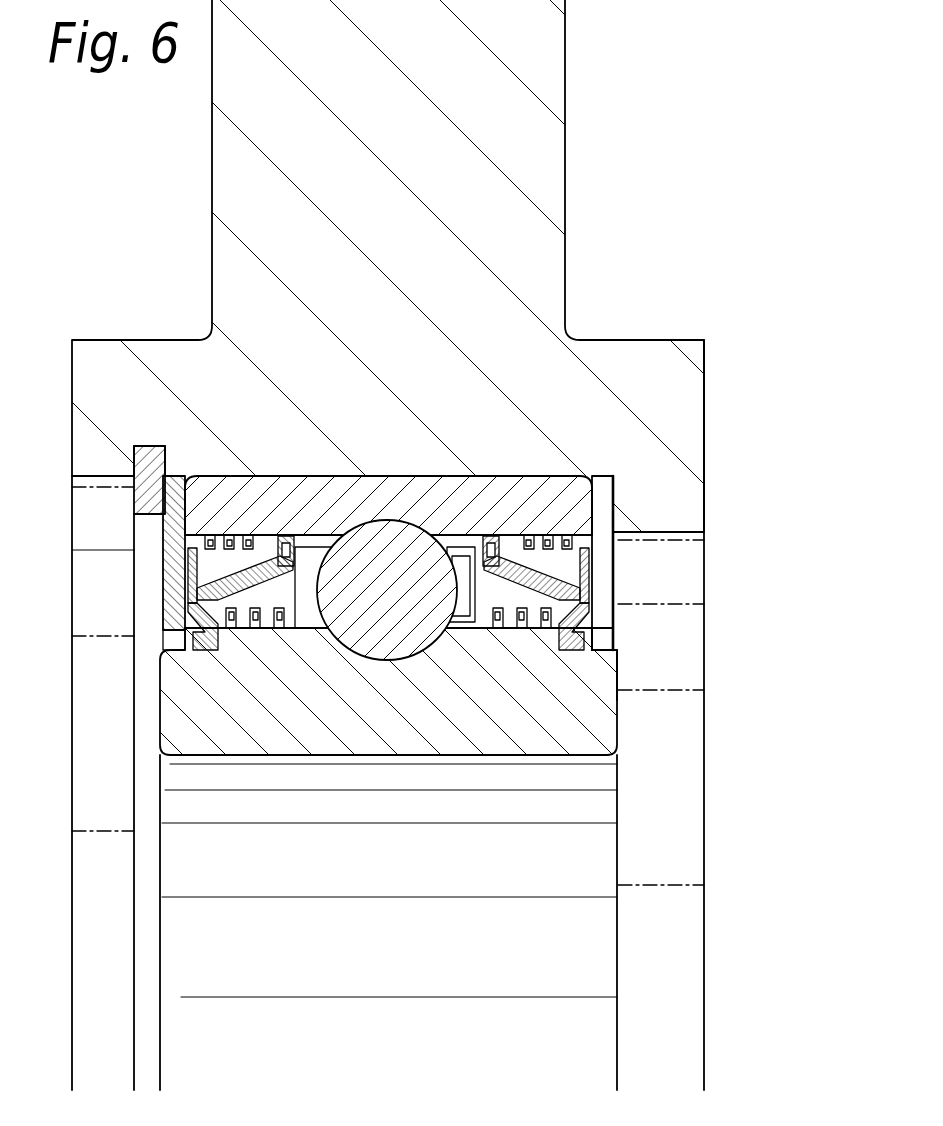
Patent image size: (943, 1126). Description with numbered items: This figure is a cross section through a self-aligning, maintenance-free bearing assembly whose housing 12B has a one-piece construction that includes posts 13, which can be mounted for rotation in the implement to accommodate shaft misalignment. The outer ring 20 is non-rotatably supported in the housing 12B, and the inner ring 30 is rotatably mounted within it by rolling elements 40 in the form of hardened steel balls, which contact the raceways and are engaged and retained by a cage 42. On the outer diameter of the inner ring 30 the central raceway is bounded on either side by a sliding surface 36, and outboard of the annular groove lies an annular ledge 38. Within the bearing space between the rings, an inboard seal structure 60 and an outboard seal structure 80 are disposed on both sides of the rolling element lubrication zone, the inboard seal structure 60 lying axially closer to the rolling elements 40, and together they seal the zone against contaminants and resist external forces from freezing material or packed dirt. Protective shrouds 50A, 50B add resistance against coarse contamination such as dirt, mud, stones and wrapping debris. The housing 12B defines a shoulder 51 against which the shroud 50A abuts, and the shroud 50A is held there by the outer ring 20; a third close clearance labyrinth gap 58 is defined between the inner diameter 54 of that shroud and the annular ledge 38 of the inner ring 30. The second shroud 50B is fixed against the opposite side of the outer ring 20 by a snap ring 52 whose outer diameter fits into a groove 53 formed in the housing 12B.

The housing 12B is at (471, 563).
The posts 13 is at (520, 235).
The outer ring 20 is at (477, 505).
The inner ring 30 is at (400, 641).
The sliding surface 36 is at (310, 629).
The annular ledge 38 is at (598, 652).
The rolling elements 40 is at (372, 545).
The cage 42 is at (466, 575).
The protective shroud 50A is at (605, 582).
The protective shroud 50B is at (172, 537).
The shoulder 51 is at (688, 484).
The snap ring 52 is at (132, 490).
The groove 53 is at (153, 452).
The inner diameter of the shroud 54 is at (612, 645).
The third close clearance labyrinth gap 58 is at (170, 640).
The inboard seal structure 60 is at (262, 627).
The outboard seal structure 80 is at (213, 560).